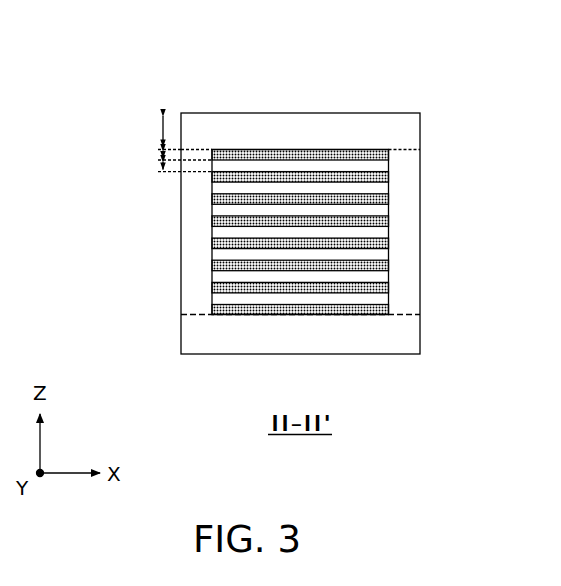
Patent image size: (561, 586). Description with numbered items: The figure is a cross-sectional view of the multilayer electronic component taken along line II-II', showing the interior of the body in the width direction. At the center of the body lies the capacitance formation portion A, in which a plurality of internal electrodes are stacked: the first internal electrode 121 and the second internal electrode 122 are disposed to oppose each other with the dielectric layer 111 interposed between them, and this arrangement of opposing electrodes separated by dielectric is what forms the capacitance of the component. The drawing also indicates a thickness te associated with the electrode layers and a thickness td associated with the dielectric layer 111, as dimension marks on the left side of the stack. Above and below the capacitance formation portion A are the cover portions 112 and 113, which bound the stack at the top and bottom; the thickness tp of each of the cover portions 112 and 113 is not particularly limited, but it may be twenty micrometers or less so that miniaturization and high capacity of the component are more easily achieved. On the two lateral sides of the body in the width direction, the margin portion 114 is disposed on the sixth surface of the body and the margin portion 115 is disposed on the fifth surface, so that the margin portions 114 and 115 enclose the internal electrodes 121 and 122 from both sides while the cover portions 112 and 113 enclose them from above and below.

The dielectric layer 111 is at (389, 163).
The cover portion 112 is at (306, 128).
The cover portion 113 is at (412, 332).
The margin portion 114 is at (197, 270).
The margin portion 115 is at (412, 256).
The first internal electrode 121 is at (420, 148).
The second internal electrode 122 is at (389, 173).
The capacitance formation portion A is at (205, 233).
The thickness of cover portion tp is at (158, 132).
The electrode thickness te is at (158, 149).
The dielectric thickness td is at (158, 166).